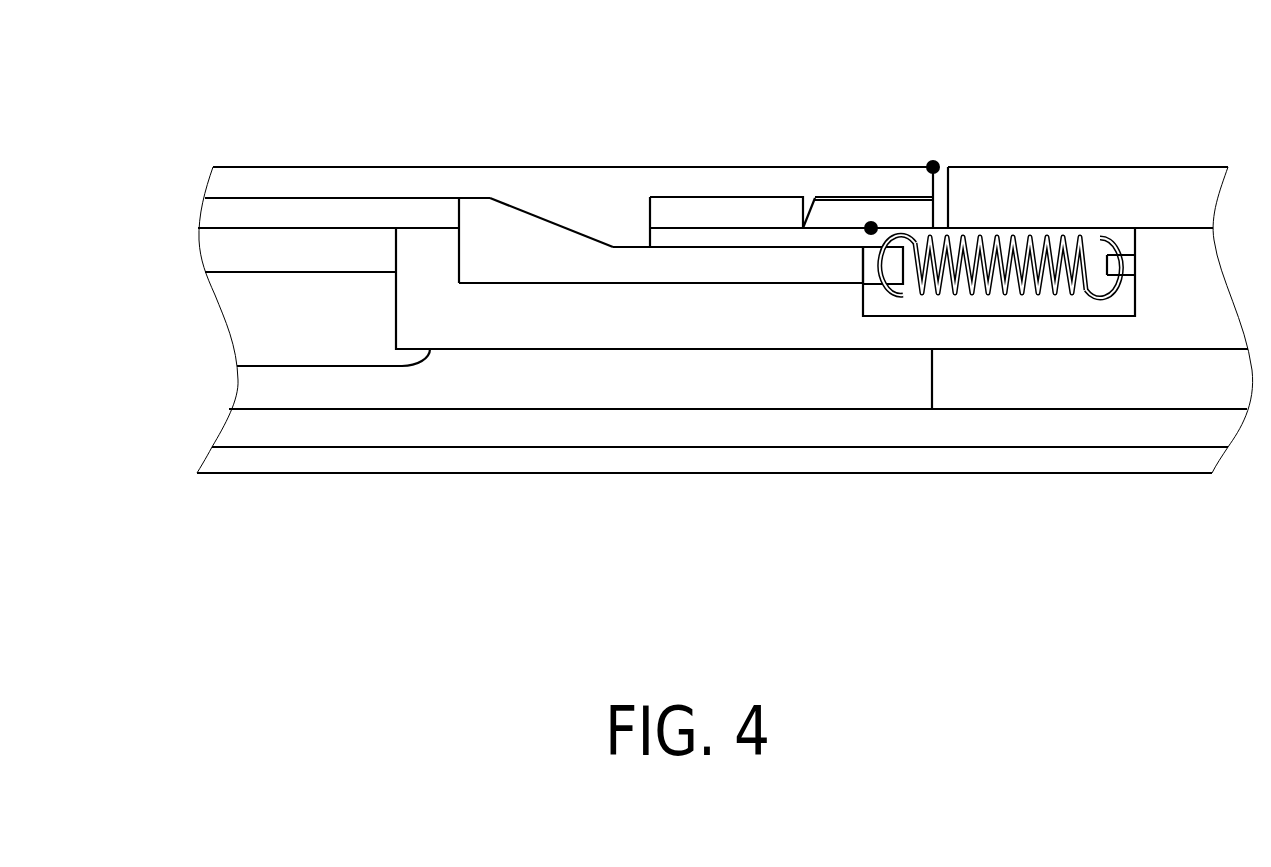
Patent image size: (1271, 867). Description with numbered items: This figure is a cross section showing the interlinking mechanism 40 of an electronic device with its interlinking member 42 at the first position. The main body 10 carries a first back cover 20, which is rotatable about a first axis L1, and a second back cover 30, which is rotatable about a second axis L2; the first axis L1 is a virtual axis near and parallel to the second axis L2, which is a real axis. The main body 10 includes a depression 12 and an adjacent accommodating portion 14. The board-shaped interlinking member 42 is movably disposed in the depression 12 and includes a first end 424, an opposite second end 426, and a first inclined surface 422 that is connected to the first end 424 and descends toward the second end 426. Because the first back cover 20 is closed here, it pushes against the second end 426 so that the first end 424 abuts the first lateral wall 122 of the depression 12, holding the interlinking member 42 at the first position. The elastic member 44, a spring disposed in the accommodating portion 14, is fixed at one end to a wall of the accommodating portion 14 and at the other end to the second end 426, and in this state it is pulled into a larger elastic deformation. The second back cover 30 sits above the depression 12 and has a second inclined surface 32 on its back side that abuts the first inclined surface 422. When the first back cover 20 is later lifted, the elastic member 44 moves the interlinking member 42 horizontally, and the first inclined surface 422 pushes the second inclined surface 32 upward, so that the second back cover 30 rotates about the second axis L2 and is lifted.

The main body 10 is at (698, 383).
The depression 12 is at (557, 283).
The first lateral wall 122 is at (459, 260).
The accommodating portion 14 is at (1048, 307).
The first back cover 20 is at (1065, 190).
The second back cover 30 is at (318, 180).
The second inclined surface 32 is at (567, 229).
The interlinking mechanism 40 is at (748, 307).
The interlinking member 42 is at (648, 276).
The first inclined surface 422 is at (542, 217).
The first end 424 is at (459, 217).
The second end 426 is at (903, 262).
The elastic member 44 is at (925, 280).
The first axis L1 is at (933, 167).
The second axis L2 is at (871, 228).